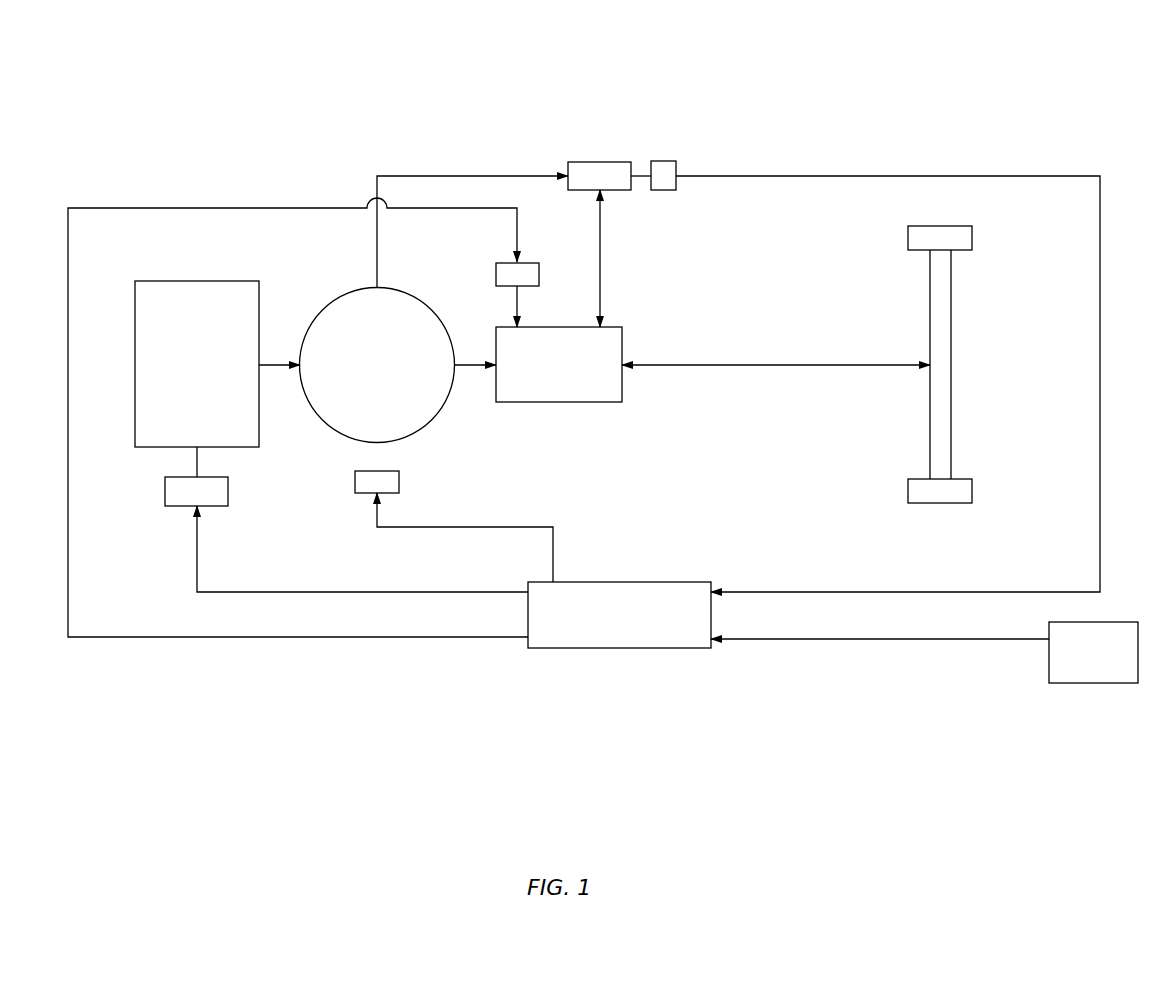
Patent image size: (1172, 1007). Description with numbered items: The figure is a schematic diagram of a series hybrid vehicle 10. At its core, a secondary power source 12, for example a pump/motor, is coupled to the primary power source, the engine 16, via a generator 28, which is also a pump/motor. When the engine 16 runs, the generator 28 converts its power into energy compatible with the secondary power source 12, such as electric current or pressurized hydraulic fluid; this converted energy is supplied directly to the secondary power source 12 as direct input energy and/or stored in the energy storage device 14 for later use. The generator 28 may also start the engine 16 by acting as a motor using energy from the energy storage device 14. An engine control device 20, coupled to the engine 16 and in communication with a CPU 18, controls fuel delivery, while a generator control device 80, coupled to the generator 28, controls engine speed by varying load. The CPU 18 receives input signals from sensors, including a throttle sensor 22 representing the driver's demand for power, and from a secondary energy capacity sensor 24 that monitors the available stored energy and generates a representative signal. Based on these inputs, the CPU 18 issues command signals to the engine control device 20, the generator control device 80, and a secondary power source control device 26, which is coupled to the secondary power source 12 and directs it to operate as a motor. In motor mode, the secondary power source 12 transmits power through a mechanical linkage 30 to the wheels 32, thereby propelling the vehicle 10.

The series hybrid vehicle 10 is at (1018, 86).
The secondary power source 12 is at (558, 402).
The energy storage device 14 is at (600, 162).
The engine 16 is at (197, 281).
The CPU 18 is at (608, 582).
The engine control device 20 is at (212, 506).
The throttle sensor 22 is at (1093, 683).
The secondary energy capacity sensor 24 is at (663, 161).
The secondary power source control device 26 is at (525, 263).
The generator 28 is at (400, 292).
The mechanical linkage 30 is at (952, 345).
The wheels 32 is at (940, 226).
The generator control device 80 is at (385, 471).